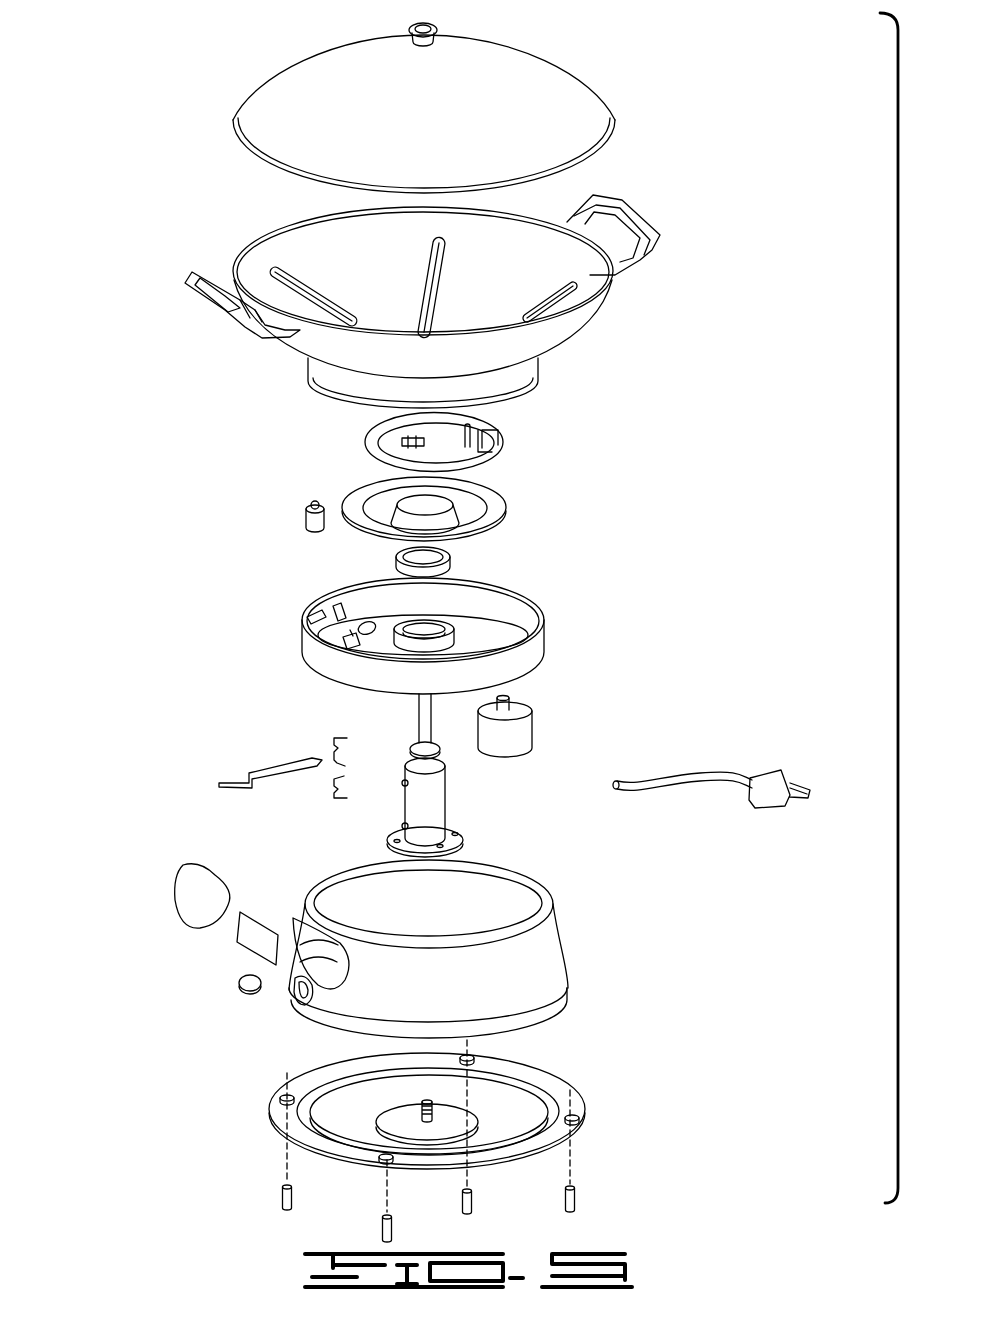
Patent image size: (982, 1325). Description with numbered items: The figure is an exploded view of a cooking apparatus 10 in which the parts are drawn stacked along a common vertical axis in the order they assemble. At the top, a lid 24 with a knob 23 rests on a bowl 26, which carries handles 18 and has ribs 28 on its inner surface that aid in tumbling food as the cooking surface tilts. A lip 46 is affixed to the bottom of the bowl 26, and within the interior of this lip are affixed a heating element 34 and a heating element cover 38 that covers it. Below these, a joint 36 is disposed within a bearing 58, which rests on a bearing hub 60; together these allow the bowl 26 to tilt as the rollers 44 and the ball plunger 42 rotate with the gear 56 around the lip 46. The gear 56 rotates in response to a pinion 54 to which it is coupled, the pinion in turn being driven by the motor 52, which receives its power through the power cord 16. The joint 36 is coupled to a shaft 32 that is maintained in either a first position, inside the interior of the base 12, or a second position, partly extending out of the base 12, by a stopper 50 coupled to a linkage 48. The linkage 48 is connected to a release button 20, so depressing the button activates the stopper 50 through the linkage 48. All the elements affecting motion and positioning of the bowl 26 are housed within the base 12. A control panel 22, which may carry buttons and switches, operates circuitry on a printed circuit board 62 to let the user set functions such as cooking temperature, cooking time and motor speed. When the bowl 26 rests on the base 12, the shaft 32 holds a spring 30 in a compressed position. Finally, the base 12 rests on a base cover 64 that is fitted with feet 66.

The cooking apparatus 10 is at (133, 86).
The base 12 is at (552, 905).
The power cord 16 is at (716, 770).
The handles 18 is at (630, 205).
The release button 20 is at (243, 998).
The control panel 22 is at (175, 878).
The knob 23 is at (407, 30).
The lid 24 is at (560, 62).
The bowl 26 is at (585, 318).
The ribs 28 is at (274, 268).
The spring 30 is at (422, 1102).
The shaft 32 is at (418, 718).
The heating element 34 is at (505, 440).
The joint 36 is at (408, 437).
The heating element cover 38 is at (505, 500).
The ball plunger 42 is at (303, 516).
The rollers 44 is at (355, 620).
The lip 46 is at (322, 388).
The linkage 48 is at (226, 778).
The stopper 50 is at (330, 745).
The motor 52 is at (535, 735).
The pinion 54 is at (508, 700).
The gear 56 is at (546, 630).
The bearing 58 is at (450, 563).
The bearing hub 60 is at (448, 808).
The printed circuit board 62 is at (245, 945).
The base cover 64 is at (555, 1075).
The feet 66 is at (283, 1195).